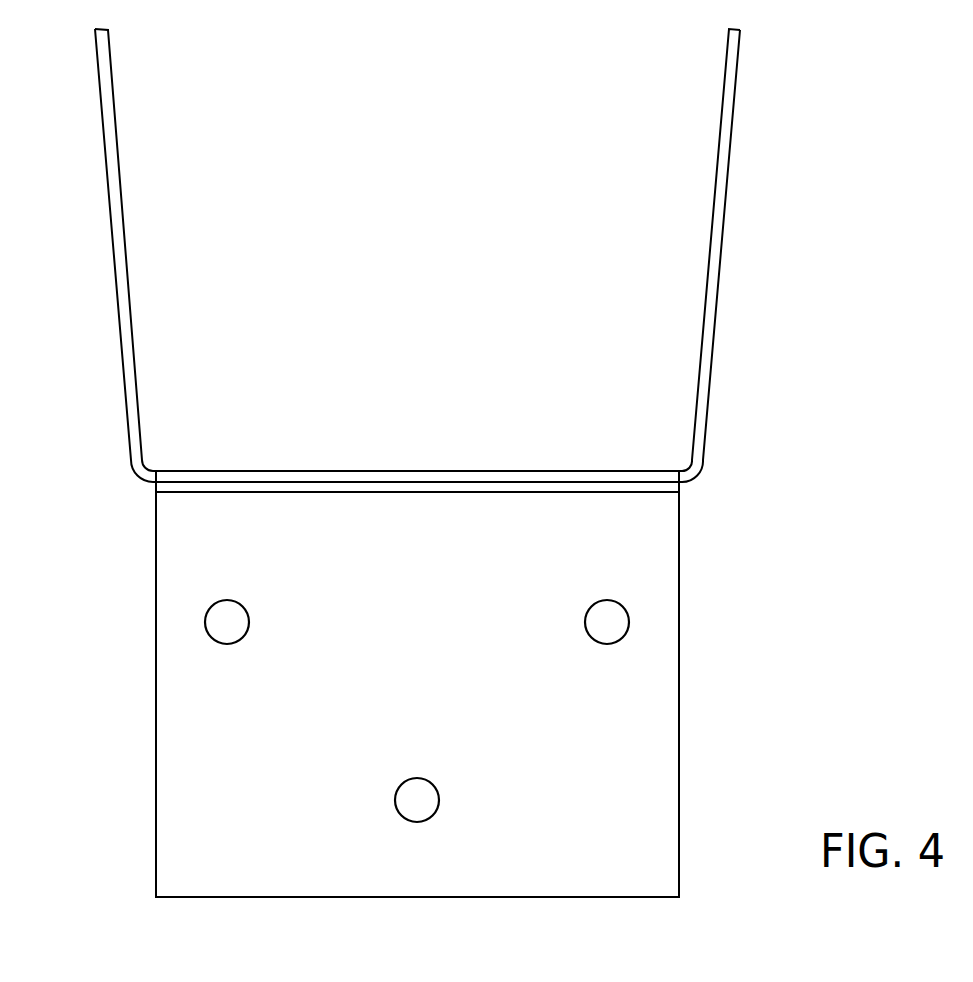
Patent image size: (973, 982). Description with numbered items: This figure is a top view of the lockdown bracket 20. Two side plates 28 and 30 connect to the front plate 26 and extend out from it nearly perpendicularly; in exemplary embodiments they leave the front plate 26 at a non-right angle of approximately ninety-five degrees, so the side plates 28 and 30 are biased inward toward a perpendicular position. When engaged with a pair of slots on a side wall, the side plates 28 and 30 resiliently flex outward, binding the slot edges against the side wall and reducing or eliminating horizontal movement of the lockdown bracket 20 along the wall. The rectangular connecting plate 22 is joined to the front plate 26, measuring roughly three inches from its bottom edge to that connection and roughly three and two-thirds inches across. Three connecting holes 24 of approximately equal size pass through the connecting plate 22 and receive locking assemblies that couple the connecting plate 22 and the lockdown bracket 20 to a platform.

The lockdown bracket 20 is at (467, 463).
The connecting plate 22 is at (650, 723).
The connecting holes 24 is at (420, 797).
The front plate 26 is at (425, 470).
The side plate 28 is at (118, 249).
The side plate 30 is at (711, 303).